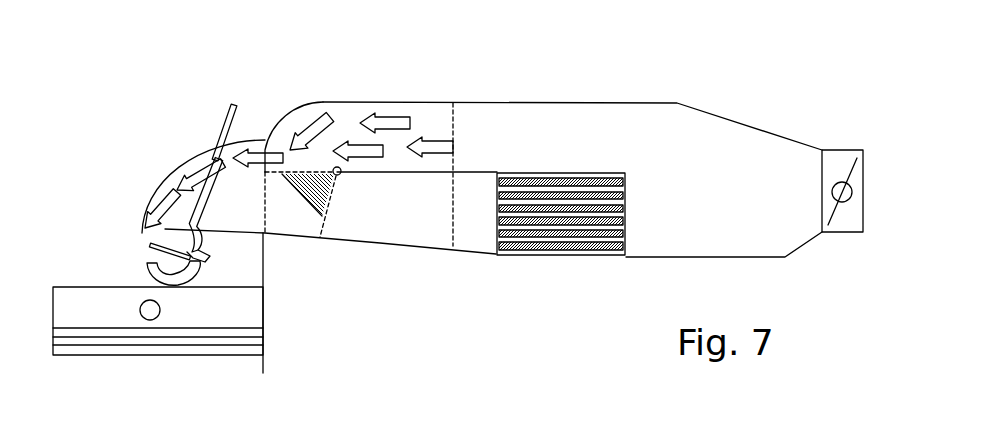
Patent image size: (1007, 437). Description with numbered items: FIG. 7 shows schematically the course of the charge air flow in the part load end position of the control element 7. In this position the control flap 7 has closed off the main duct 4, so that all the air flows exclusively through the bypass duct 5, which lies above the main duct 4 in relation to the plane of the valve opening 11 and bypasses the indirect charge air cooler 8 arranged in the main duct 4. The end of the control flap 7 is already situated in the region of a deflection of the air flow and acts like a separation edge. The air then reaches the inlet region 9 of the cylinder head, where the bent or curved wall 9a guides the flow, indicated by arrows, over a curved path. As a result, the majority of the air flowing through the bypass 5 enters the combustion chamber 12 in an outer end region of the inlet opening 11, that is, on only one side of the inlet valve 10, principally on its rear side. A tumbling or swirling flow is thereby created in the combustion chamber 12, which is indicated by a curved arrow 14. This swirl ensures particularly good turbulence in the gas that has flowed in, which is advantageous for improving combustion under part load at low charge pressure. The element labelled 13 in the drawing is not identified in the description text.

The main duct 4 is at (468, 237).
The bypass duct 5 is at (433, 117).
The control element 7 is at (327, 197).
The indirect charge air cooler 8 is at (525, 237).
The inlet region 9 is at (222, 200).
The curved wall 9a is at (170, 170).
The inlet valve 10 is at (230, 113).
The inlet opening 11 is at (226, 255).
The combustion chamber 12 is at (114, 261).
The rail 13 is at (125, 322).
The curved arrow 14 is at (173, 283).